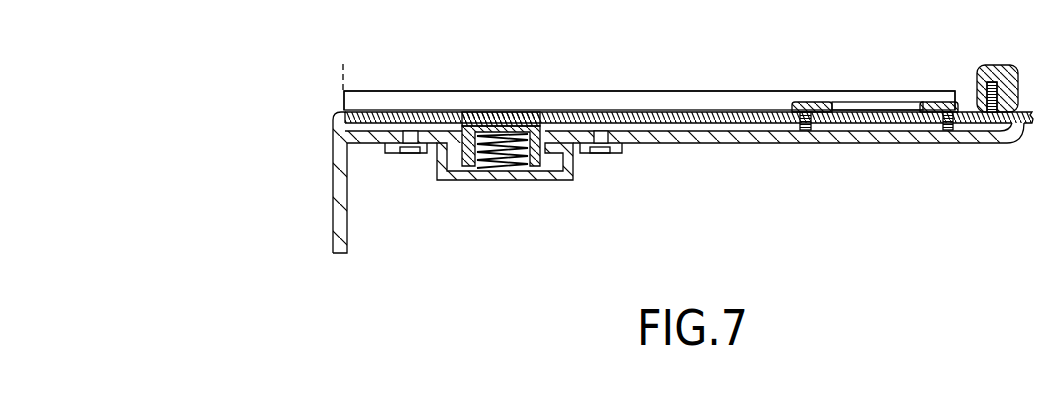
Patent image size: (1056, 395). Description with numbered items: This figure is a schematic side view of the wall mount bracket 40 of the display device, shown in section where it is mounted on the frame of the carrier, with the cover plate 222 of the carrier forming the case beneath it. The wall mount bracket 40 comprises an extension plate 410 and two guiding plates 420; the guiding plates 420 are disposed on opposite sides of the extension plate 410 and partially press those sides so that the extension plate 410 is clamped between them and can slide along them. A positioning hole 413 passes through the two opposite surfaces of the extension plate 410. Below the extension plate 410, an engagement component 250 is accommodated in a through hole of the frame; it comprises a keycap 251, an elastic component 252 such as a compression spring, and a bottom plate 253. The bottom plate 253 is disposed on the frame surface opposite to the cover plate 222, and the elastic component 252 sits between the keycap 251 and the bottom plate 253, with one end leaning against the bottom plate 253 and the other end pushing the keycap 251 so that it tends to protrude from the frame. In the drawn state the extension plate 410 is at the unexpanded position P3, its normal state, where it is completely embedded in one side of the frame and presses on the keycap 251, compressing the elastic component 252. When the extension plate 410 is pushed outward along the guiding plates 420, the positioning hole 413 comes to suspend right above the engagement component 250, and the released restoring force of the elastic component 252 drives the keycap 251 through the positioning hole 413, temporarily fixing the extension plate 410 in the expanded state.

The wall mount bracket 40 is at (760, 80).
The extension plate 410 is at (628, 111).
The positioning hole 413 is at (879, 106).
The guiding plate 420 is at (697, 92).
The cover plate 222 is at (339, 197).
The engagement component 250 is at (517, 152).
The keycap 251 is at (502, 111).
The elastic component 252 is at (469, 172).
The bottom plate 253 is at (512, 181).
The unexpanded position P3 is at (344, 64).